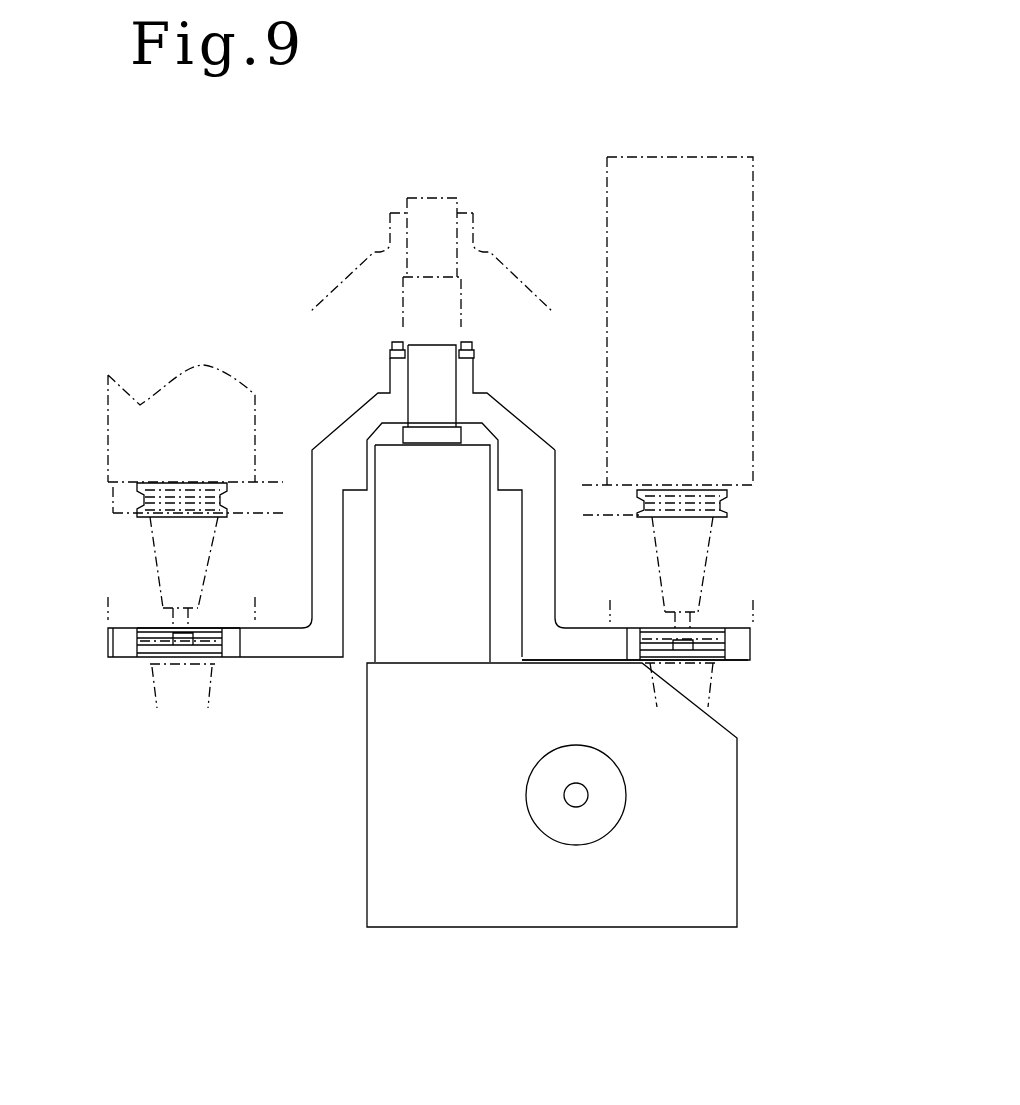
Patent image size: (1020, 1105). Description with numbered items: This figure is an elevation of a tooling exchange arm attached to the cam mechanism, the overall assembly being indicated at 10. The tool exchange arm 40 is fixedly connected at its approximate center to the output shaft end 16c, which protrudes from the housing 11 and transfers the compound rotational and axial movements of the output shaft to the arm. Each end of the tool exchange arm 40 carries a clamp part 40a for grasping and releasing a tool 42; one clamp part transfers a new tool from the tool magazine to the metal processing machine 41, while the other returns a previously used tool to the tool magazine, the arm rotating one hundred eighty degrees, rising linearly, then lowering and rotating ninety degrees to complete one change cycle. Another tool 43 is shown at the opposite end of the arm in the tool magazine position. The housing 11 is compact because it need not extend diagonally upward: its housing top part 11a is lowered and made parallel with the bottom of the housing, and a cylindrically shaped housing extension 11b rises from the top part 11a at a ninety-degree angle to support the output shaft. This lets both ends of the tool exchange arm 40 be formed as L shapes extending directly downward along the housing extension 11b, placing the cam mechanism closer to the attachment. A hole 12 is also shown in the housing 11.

The machine tool 10 is at (735, 720).
The housing 11 is at (737, 758).
The housing top part 11a is at (590, 660).
The housing extension 11b is at (372, 598).
The shaft hole 12 is at (583, 803).
The output shaft end 16c is at (447, 383).
The tool exchange arm 40 is at (322, 452).
The clamp part 40a is at (150, 648).
The metal processing machine 41 is at (120, 437).
The tool 42 is at (167, 560).
The tool 43 is at (753, 289).